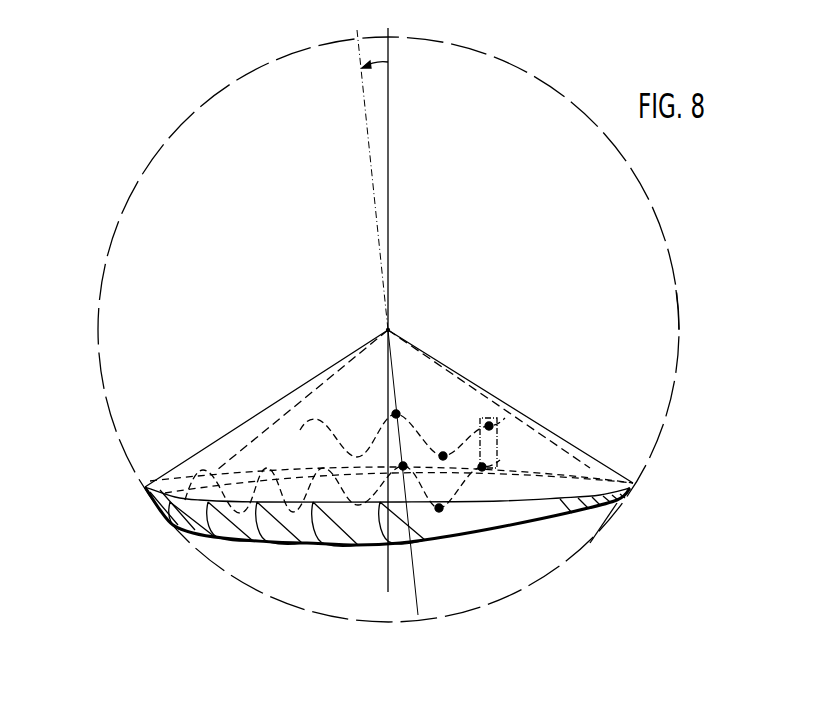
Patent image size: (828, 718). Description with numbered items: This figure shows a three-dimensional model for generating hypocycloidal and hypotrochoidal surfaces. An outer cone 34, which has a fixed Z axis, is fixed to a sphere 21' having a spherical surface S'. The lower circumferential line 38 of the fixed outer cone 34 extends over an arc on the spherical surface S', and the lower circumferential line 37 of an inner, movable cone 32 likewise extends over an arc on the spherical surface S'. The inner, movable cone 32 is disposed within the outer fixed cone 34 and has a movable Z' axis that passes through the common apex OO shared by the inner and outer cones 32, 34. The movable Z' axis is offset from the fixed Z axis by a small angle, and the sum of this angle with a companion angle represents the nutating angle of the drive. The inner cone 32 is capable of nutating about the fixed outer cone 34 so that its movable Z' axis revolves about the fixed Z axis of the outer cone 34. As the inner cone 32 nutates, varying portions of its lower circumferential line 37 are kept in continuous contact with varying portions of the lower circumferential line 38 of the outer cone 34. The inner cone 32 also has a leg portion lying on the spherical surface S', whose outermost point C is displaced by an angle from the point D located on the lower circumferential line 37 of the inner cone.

The sphere 21' is at (374, 329).
The spherical surface S' is at (699, 297).
The fixed Z axis Z is at (402, 310).
The movable Z' axis Z' is at (377, 322).
The common apex OO is at (389, 330).
The outer cone 34 is at (243, 421).
The inner movable cone 32 is at (493, 510).
The lower circumferential line of inner cone 37 is at (480, 537).
The lower circumferential line of outer cone 38 is at (563, 497).
The outermost point of leg portion C is at (492, 425).
The point on lower circumferential line D is at (484, 466).